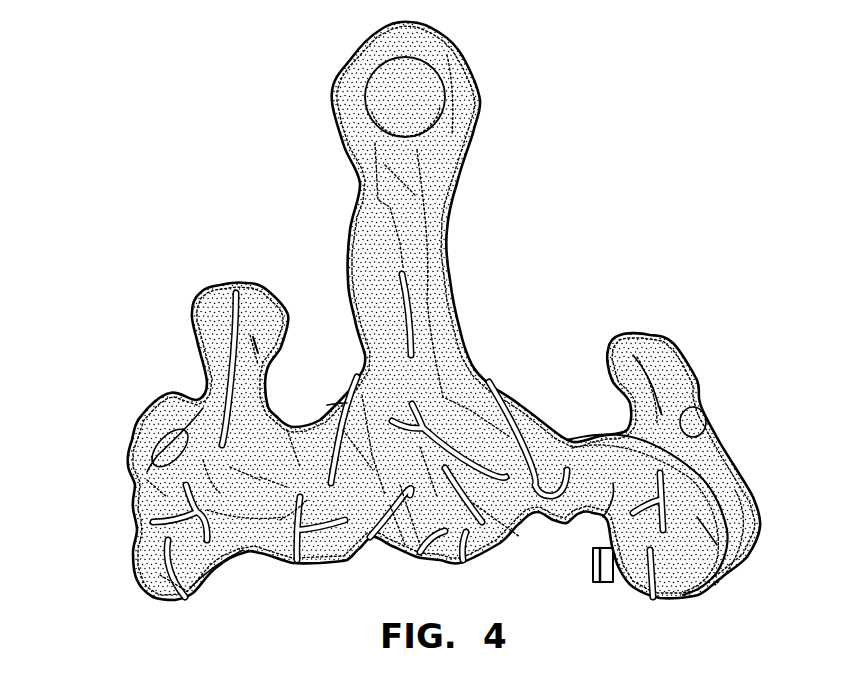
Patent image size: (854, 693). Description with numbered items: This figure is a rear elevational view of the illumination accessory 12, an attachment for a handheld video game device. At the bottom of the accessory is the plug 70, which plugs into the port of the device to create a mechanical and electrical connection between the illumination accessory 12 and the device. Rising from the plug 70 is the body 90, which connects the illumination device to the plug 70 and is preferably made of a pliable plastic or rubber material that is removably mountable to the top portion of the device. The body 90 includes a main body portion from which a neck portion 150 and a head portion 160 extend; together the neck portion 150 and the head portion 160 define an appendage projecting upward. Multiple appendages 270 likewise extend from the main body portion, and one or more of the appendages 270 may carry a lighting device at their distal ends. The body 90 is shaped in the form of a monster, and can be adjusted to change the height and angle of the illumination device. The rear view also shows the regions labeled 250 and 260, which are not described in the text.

The illumination accessory 12 is at (598, 213).
The plug 70 is at (592, 565).
The body 90 is at (493, 338).
The neck portion 150 is at (449, 243).
The head portion 160 is at (485, 113).
The posterior lobe 250 is at (761, 565).
The anterior lobe 260 is at (134, 562).
The appendages 270 is at (197, 300).